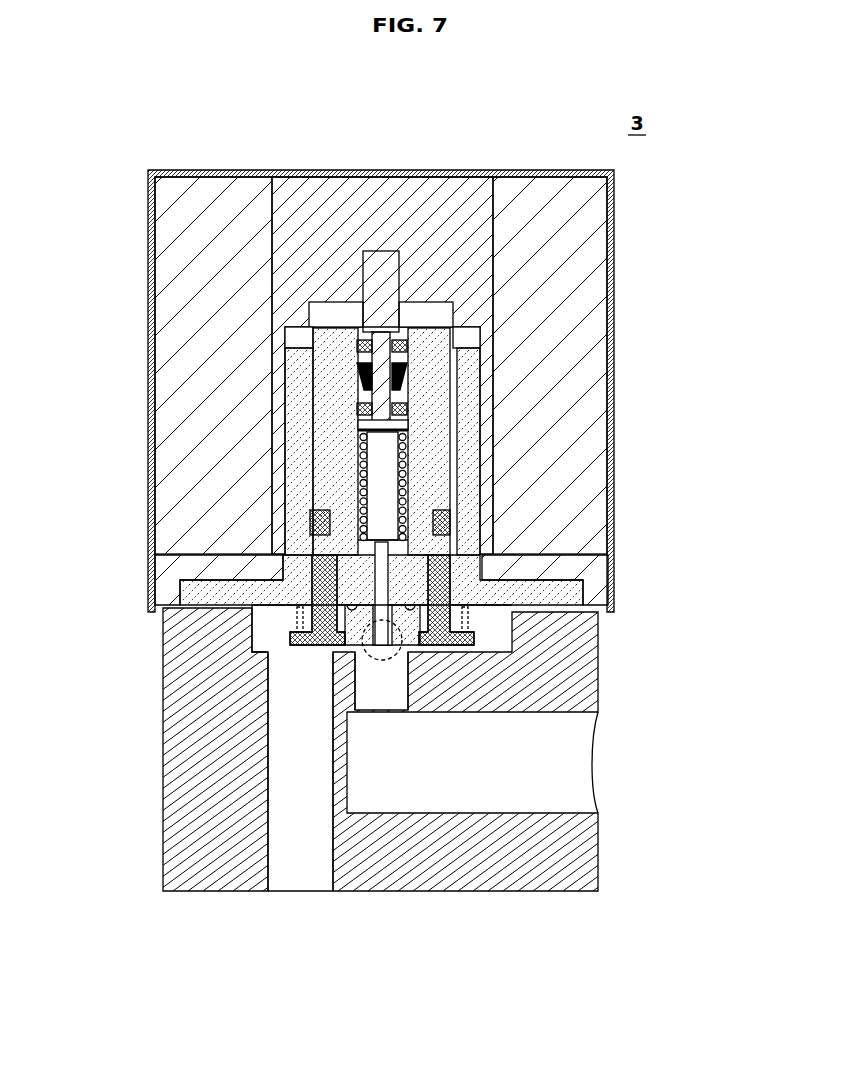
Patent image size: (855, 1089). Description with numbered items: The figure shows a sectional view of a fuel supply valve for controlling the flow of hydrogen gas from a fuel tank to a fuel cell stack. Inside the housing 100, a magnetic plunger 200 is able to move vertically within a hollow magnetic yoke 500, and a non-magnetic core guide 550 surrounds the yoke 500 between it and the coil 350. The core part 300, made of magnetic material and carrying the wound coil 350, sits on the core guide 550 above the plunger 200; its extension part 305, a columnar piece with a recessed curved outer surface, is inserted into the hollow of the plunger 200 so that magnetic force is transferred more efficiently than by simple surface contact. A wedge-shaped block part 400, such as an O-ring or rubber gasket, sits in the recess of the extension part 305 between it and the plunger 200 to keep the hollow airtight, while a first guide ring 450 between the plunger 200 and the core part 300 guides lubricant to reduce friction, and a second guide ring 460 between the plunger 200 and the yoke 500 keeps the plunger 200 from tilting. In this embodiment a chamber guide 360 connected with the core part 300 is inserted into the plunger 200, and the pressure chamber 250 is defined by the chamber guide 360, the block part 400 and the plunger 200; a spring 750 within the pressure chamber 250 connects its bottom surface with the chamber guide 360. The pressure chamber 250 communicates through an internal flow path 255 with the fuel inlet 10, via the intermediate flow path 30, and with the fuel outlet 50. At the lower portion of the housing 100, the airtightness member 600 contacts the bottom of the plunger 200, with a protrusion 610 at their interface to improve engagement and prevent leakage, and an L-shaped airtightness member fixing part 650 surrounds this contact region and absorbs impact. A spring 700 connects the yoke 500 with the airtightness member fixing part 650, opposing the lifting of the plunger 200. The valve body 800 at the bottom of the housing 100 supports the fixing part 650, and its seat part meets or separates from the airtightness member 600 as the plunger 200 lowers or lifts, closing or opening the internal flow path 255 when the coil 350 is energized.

The fuel inlet 10 is at (571, 795).
The intermediate flow path 30 is at (381, 700).
The fuel outlet 50 is at (312, 870).
The housing 100 is at (613, 290).
The plunger 200 is at (426, 412).
The pressure chamber 250 is at (388, 452).
The internal flow path 255 is at (333, 557).
The core part 300 is at (362, 185).
The extension part 305 is at (388, 360).
The coil 350 is at (590, 212).
The chamber guide 360 is at (383, 250).
The block part 400 is at (356, 376).
The first guide ring 450 is at (356, 345).
The second guide ring 460 is at (318, 522).
The yoke 500 is at (593, 608).
The core guide 550 is at (572, 590).
The airtightness member 600 is at (412, 622).
The protrusion 610 is at (347, 650).
The airtightness member fixing part 650 is at (428, 646).
The spring 700 is at (465, 620).
The spring 750 is at (401, 497).
The valve body 800 is at (265, 623).